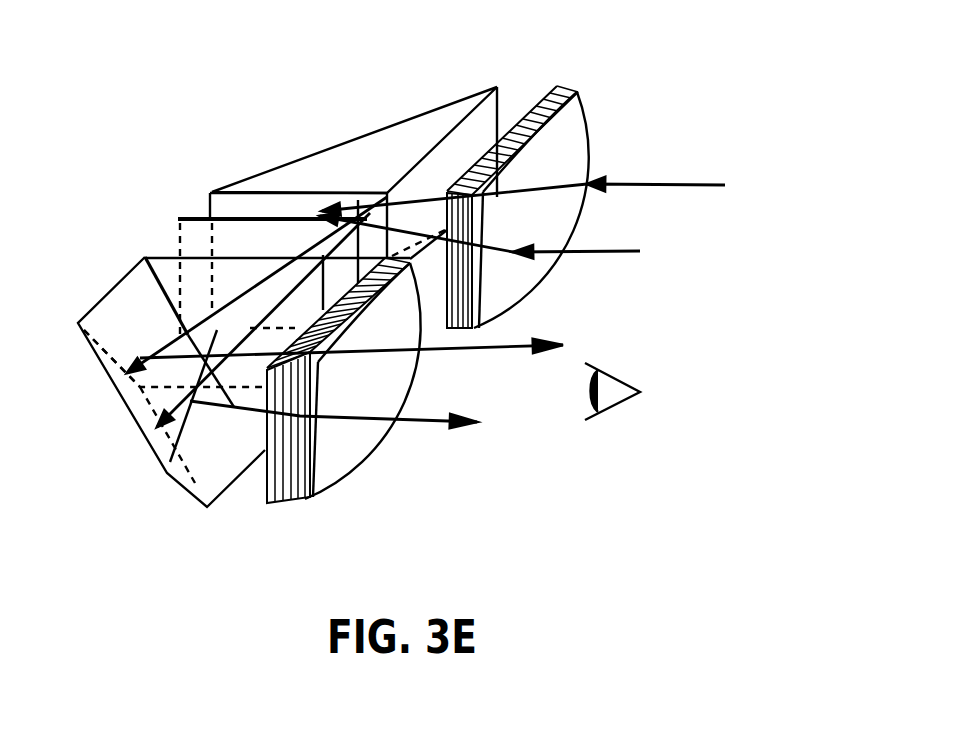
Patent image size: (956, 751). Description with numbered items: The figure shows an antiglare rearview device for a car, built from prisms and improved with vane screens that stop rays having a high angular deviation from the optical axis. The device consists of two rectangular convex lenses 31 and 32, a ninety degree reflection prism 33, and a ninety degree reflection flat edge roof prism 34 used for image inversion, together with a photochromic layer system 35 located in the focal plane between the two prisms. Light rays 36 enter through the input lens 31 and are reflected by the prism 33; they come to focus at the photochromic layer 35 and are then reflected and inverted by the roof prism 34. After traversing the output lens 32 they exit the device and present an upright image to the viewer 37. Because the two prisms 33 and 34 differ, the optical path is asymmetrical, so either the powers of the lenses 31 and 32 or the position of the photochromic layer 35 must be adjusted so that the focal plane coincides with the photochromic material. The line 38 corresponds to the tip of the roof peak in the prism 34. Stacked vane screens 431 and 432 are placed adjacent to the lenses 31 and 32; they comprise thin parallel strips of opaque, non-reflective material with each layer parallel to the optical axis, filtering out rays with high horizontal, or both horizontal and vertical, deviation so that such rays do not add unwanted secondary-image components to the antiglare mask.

The rectangular convex lens 31 is at (585, 135).
The rectangular convex lens 32 is at (380, 448).
The 90 degree reflection prism 33 is at (398, 123).
The flat edge roof prism 34 is at (125, 248).
The photochromic layer system 35 is at (182, 217).
The light rays 36 is at (688, 186).
The viewer 37 is at (610, 403).
The line corresponding to the tip of the roof peak 38 is at (122, 398).
The first lens array 431 is at (267, 500).
The second lens array 432 is at (557, 88).